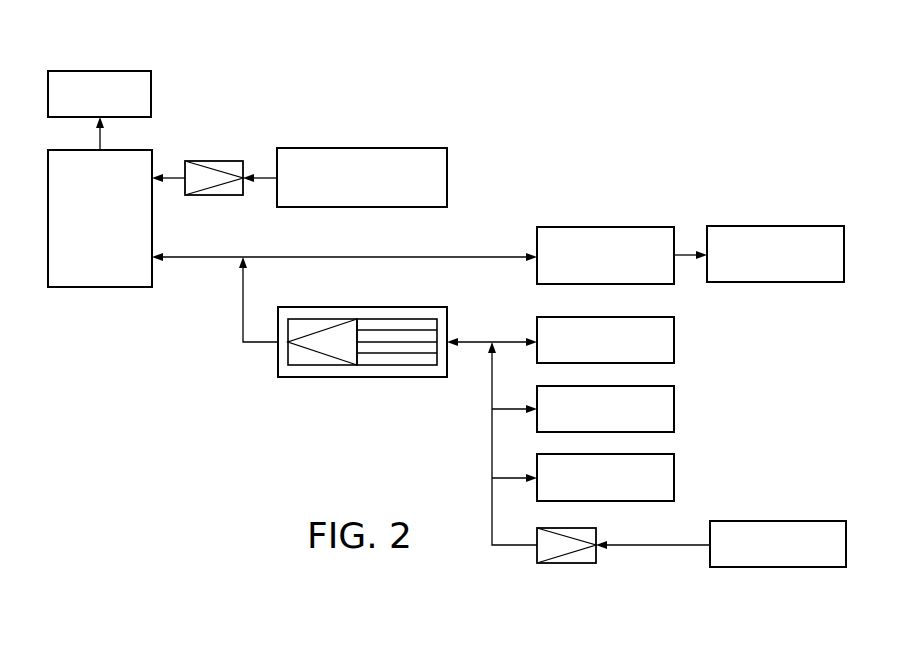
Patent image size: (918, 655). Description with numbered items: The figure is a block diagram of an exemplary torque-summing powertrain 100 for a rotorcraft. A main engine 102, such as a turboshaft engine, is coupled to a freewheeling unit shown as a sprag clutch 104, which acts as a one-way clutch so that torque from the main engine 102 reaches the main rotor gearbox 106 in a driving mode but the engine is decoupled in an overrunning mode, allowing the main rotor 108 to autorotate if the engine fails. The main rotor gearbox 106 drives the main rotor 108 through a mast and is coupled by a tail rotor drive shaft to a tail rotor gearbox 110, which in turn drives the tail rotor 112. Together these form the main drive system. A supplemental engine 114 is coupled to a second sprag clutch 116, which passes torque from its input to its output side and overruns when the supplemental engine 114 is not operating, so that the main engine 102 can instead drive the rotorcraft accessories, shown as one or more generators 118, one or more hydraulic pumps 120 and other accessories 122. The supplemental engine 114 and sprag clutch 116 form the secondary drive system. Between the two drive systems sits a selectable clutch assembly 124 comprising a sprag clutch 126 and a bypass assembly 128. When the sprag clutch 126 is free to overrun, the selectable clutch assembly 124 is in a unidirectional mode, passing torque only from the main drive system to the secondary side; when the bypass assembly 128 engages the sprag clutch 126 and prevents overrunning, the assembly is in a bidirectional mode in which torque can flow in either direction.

The torque-summing powertrain 100 is at (636, 100).
The main engine 102 is at (360, 148).
The sprag clutch 104 is at (213, 161).
The main rotor gearbox 106 is at (90, 287).
The main rotor 108 is at (88, 71).
The tail rotor gearbox 110 is at (607, 227).
The tail rotor 112 is at (775, 226).
The supplemental engine 114 is at (778, 567).
The sprag clutch 116 is at (566, 563).
The generators 118 is at (674, 486).
The hydraulic pumps 120 is at (674, 418).
The other accessories 122 is at (674, 350).
The selectable clutch assembly 124 is at (360, 377).
The sprag clutch 126 is at (308, 367).
The bypass assembly 128 is at (403, 367).